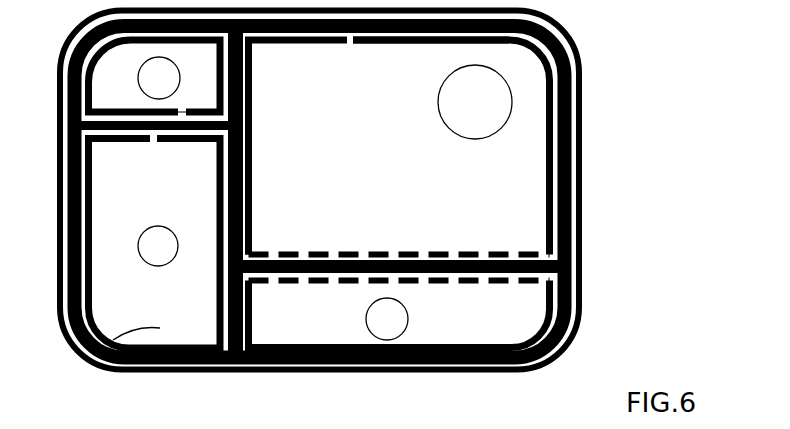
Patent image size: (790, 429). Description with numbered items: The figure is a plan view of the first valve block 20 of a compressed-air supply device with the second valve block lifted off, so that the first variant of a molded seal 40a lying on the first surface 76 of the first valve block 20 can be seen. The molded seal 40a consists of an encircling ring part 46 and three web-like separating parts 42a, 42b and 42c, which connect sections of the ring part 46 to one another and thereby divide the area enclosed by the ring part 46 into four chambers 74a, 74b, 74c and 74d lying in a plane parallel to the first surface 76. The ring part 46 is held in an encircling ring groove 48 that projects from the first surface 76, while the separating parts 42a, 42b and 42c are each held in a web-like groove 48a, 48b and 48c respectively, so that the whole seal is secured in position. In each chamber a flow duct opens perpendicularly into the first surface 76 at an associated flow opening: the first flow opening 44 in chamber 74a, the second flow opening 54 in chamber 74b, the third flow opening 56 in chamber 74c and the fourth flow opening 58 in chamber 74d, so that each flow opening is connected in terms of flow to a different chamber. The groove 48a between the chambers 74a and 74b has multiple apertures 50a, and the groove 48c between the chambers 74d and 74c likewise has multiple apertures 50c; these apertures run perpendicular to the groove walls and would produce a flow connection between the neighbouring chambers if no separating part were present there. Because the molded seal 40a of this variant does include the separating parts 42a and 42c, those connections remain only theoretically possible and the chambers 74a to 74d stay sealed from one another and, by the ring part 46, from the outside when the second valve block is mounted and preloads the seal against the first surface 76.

The first valve block 20 is at (524, 178).
The molded seal 40a is at (410, 34).
The separating part 42a is at (445, 251).
The separating part 42b is at (253, 203).
The separating part 42c is at (115, 138).
The first flow opening 44 is at (455, 130).
The ring part 46 is at (545, 37).
The ring groove 48 is at (303, 43).
The groove 48a is at (307, 254).
The groove 48b is at (253, 162).
The groove 48c is at (199, 141).
The apertures 50a is at (383, 254).
The apertures 50c is at (180, 113).
The second flow opening 54 is at (366, 320).
The third flow opening 56 is at (150, 264).
The fourth flow opening 58 is at (140, 81).
The chamber 74a is at (400, 125).
The chamber 74b is at (500, 330).
The chamber 74c is at (168, 225).
The chamber 74d is at (214, 74).
The first surface 76 is at (93, 360).